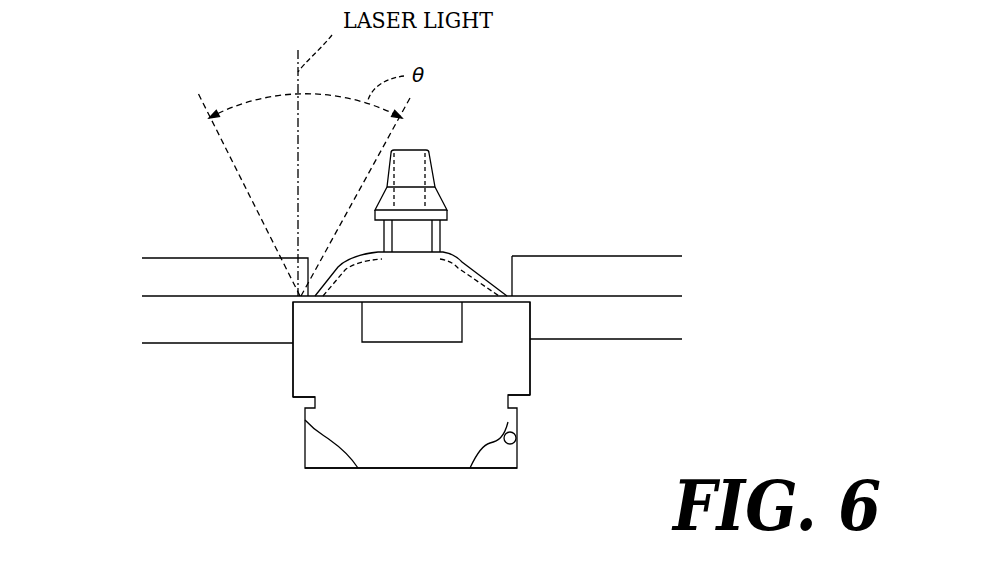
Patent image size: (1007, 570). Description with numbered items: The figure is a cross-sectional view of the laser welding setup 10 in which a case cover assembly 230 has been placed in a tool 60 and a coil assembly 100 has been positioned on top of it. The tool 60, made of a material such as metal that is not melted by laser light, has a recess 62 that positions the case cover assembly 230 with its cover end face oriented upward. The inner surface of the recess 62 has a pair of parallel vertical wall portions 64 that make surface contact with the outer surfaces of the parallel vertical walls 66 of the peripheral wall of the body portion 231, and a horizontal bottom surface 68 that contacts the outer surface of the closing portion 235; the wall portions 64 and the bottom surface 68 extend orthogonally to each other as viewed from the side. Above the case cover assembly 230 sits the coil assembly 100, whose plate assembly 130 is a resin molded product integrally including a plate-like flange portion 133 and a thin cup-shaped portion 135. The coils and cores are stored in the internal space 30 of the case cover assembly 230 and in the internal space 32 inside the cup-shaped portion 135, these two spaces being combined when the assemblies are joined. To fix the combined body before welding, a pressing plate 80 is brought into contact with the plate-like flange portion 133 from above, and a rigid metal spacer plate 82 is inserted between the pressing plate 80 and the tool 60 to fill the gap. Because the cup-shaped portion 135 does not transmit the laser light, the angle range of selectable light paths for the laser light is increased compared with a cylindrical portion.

The sensor device 10 is at (743, 190).
The coil assembly 100 is at (603, 117).
The plate assembly 130 is at (492, 193).
The cup-shaped portion 135 is at (450, 188).
The internal space 32 is at (462, 252).
The pressing plate 80 is at (673, 275).
The spacer plate 82 is at (672, 317).
The tool 60 is at (634, 473).
The recess 62 is at (518, 447).
The parallel vertical wall portion 64 is at (293, 383).
The parallel vertical wall 66 is at (293, 377).
The bottom surface 68 is at (378, 480).
The internal space 30 is at (413, 375).
The case cover assembly 230 is at (513, 375).
The body portion 231 is at (350, 383).
The closing portion 235 is at (410, 457).
The plate-like flange portion 133 is at (307, 320).